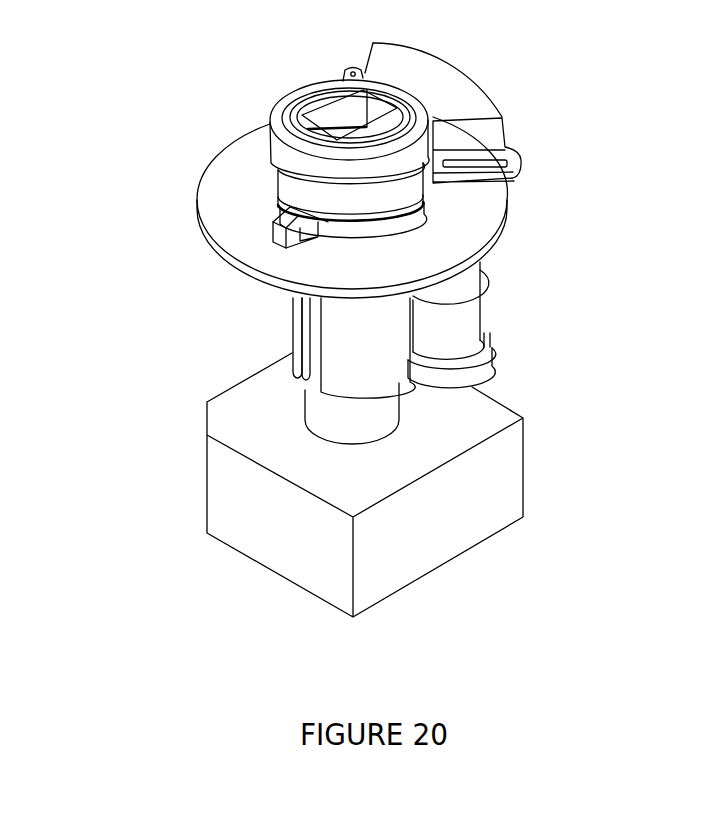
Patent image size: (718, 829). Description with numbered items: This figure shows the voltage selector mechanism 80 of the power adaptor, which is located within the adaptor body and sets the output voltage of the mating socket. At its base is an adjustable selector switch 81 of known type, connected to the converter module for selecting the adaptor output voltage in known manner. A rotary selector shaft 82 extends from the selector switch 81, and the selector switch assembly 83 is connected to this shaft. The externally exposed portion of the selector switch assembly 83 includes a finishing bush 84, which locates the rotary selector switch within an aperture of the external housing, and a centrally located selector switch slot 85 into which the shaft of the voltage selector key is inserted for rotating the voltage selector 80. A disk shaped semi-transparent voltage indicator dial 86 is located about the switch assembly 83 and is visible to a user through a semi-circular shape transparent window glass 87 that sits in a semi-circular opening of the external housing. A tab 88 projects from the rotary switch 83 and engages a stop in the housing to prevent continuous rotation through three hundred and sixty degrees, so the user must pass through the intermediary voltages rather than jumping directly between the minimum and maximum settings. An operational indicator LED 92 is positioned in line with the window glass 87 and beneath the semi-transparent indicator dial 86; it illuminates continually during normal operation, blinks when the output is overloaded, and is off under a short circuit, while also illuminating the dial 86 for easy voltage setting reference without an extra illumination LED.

The voltage selector mechanism 80 is at (418, 311).
The adjustable selector switch 81 is at (452, 508).
The rotary selector shaft 82 is at (328, 418).
The selector switch assembly 83 is at (292, 331).
The finishing bush 84 is at (280, 143).
The selector switch slot 85 is at (349, 119).
The voltage indicator dial 86 is at (457, 222).
The window glass 87 is at (437, 83).
The tab 88 is at (270, 243).
The operational indicator LED 92 is at (458, 330).